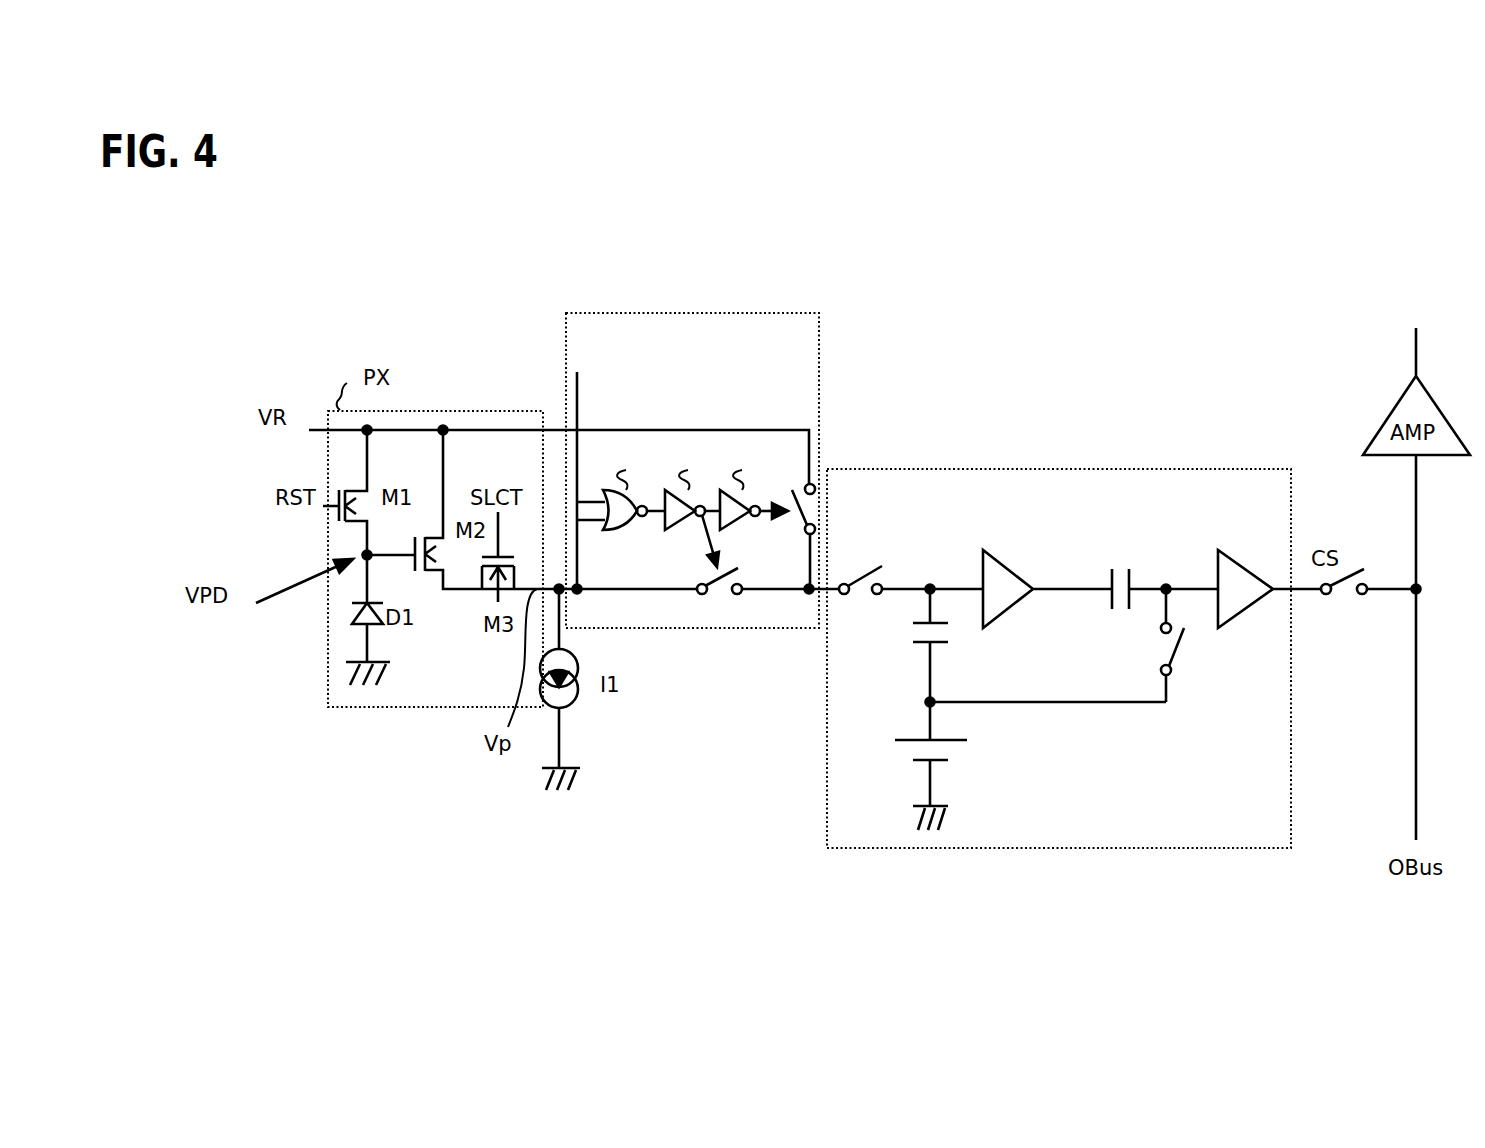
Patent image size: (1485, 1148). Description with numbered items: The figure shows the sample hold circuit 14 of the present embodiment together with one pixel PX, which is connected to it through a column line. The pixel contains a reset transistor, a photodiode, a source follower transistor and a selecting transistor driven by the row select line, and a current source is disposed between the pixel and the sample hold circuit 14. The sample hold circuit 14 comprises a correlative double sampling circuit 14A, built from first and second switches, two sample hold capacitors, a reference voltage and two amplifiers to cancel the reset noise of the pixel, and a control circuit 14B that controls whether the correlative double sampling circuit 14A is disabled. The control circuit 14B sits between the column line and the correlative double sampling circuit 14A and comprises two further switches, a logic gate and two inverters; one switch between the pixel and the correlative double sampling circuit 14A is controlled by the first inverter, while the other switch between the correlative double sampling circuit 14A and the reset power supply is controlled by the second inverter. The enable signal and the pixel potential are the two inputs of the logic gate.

The sample hold circuit 14 is at (1297, 262).
The correlative double sampling circuit 14A is at (888, 468).
The control circuit 14B is at (578, 311).